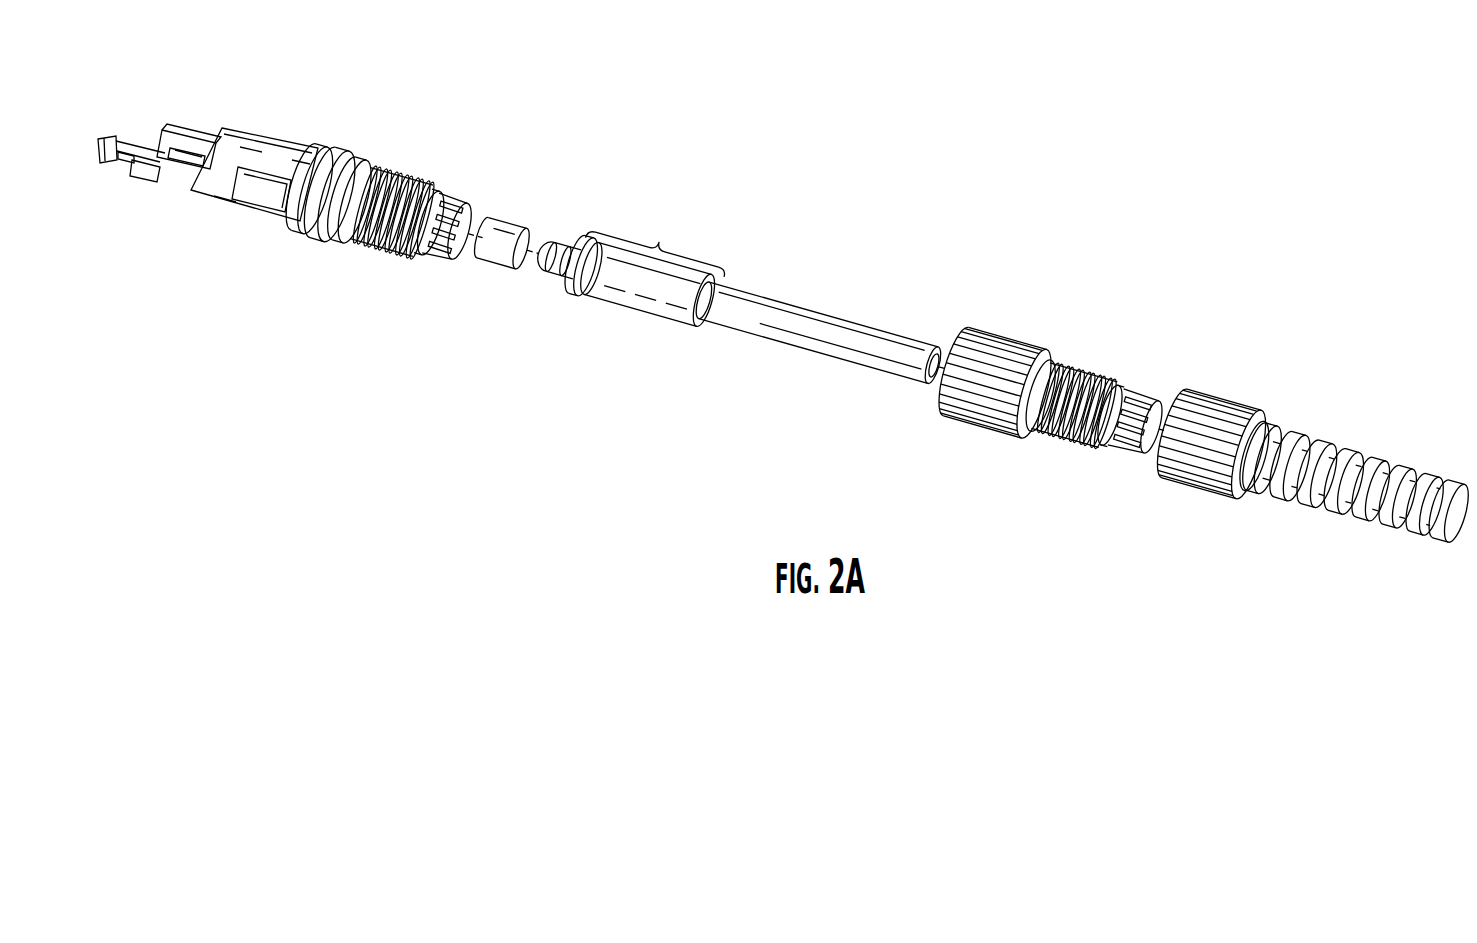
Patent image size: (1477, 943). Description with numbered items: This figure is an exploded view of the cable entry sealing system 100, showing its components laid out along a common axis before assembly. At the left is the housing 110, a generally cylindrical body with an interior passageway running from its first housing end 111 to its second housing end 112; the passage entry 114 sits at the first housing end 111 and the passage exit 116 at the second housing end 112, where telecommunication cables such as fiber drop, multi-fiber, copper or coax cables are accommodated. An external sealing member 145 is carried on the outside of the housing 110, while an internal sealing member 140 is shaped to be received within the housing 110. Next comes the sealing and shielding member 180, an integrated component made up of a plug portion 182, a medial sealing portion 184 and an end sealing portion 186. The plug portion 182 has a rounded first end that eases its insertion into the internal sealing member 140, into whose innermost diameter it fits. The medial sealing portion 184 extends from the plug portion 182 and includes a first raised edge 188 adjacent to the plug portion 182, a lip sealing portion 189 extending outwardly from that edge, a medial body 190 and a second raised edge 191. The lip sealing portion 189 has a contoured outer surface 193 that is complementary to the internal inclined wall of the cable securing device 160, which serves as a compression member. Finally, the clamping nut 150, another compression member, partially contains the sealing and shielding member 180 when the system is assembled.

The cable entry sealing system 100 is at (1182, 270).
The housing 110 is at (268, 138).
The first housing end 111 is at (122, 160).
The second housing end 112 is at (438, 262).
The passage entry 114 is at (207, 150).
The passage exit 116 is at (464, 252).
The internal sealing member 140 is at (484, 268).
The external sealing member 145 is at (350, 147).
The clamping nut 150 is at (1200, 500).
The cable securing device 160 is at (1007, 343).
The sealing and shielding member 180 is at (790, 343).
The plug portion 182 is at (553, 247).
The medial sealing portion 184 is at (657, 240).
The end sealing portion 186 is at (788, 308).
The first raised edge 188 is at (572, 285).
The lip sealing portion 189 is at (588, 283).
The medial body 190 is at (656, 316).
The second raised edge 191 is at (705, 330).
The contoured outer surface 193 is at (607, 268).